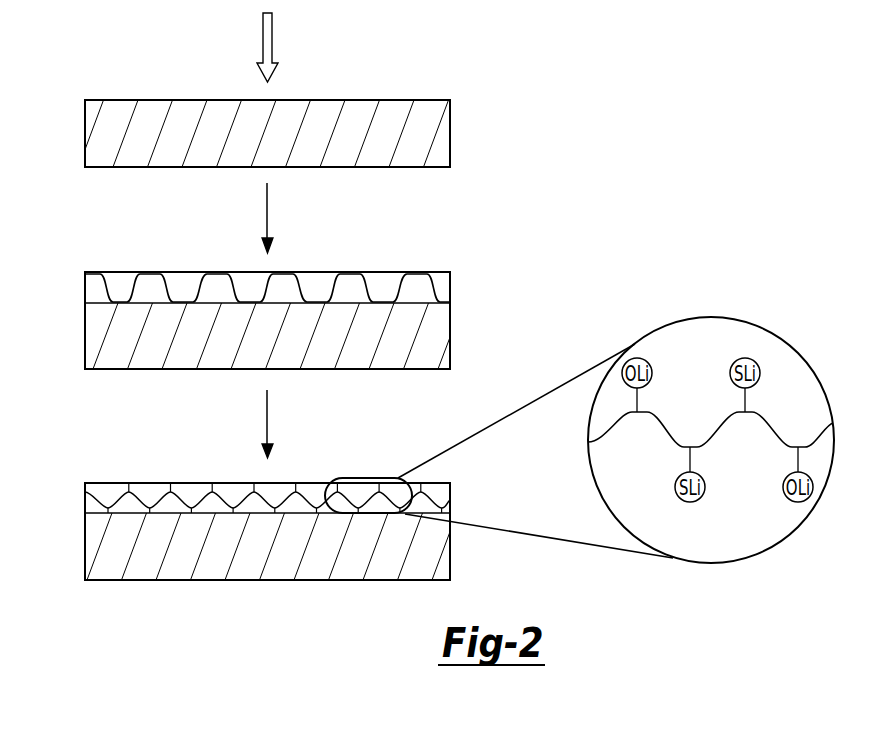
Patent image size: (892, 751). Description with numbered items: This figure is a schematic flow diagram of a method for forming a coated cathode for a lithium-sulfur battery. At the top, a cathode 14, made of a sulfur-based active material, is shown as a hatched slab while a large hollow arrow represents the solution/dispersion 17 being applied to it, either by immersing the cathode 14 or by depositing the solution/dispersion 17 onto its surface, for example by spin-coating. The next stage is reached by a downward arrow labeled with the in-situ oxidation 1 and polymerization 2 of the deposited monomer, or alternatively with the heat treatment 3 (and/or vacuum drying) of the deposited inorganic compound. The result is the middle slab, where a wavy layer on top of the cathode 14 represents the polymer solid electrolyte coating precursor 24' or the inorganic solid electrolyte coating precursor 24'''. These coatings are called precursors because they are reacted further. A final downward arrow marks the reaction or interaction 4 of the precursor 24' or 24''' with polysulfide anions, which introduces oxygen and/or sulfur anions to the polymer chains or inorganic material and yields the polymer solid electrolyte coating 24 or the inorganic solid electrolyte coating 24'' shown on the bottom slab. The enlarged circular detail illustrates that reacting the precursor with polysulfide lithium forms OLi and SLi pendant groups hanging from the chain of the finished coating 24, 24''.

The cathode 14 is at (435, 133).
The solution/dispersion 17 is at (268, 38).
The in-situ oxidation 1 is at (250, 218).
The polymerization 2 is at (250, 218).
The heat treatment 3 is at (258, 218).
The reaction with polysulfide anions 4 is at (260, 424).
The polymer solid electrolyte coating precursor 24' is at (267, 256).
The inorganic solid electrolyte coating precursor 24''' is at (320, 256).
The polymer solid electrolyte coating 24 is at (263, 468).
The inorganic solid electrolyte coating 24'' is at (263, 468).